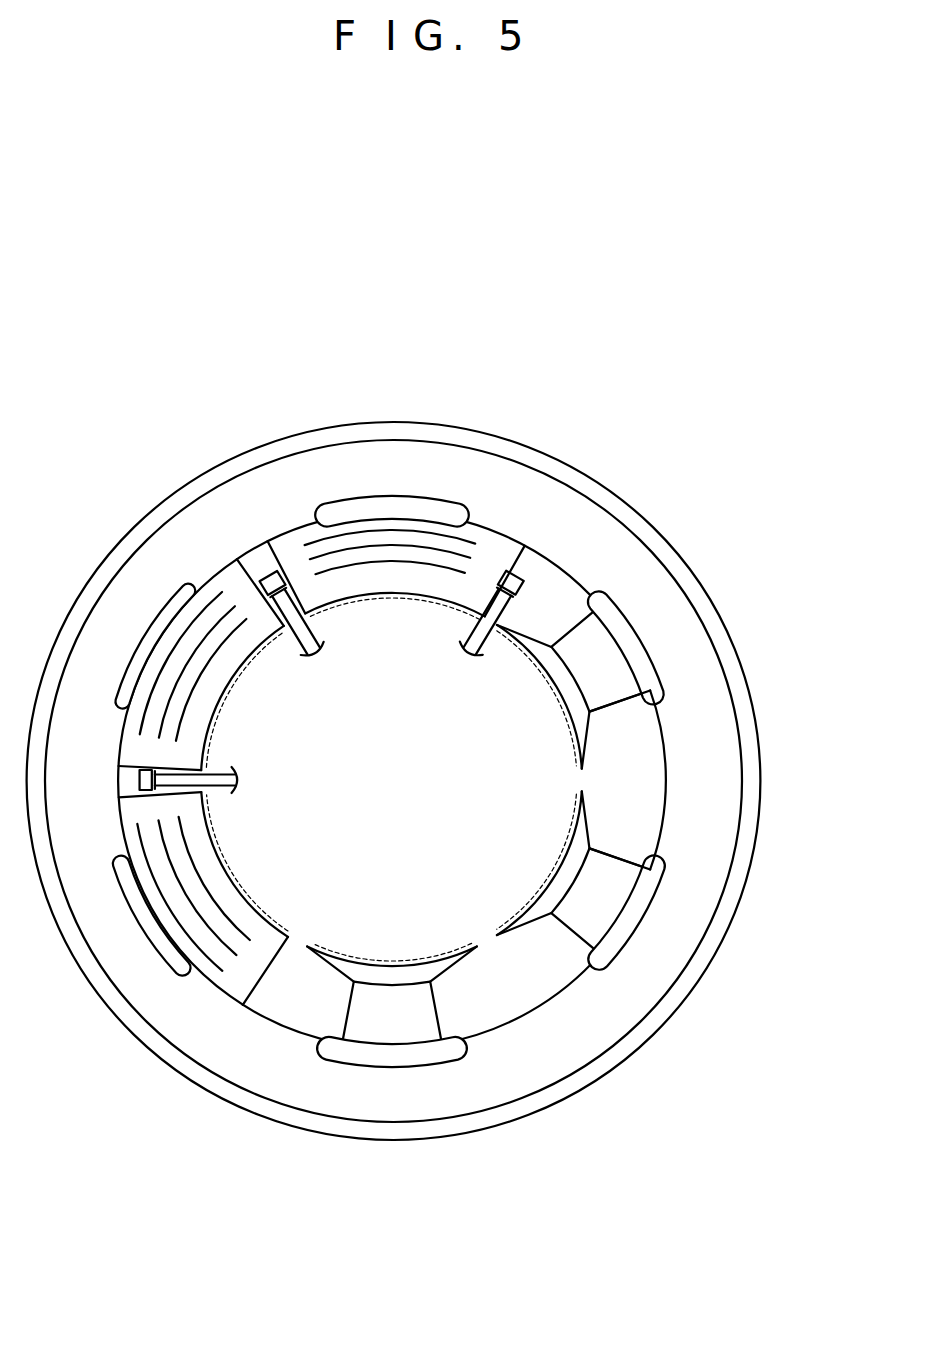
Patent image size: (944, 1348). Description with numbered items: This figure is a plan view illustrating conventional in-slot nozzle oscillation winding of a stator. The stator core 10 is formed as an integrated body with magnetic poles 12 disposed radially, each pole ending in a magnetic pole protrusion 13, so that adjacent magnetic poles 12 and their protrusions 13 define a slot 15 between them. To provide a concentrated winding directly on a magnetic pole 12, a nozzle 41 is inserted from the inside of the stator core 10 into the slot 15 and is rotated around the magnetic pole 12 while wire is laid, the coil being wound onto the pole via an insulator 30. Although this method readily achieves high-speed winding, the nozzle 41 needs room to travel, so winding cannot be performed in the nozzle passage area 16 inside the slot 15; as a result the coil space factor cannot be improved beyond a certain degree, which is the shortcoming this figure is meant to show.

The stator core 10 is at (200, 477).
The insulator 30 is at (585, 548).
The magnetic pole 12 is at (607, 662).
The magnetic pole protrusion 13 is at (583, 723).
The slot 15 is at (620, 787).
The nozzle passage area 16 is at (263, 552).
The nozzle 41 is at (455, 672).